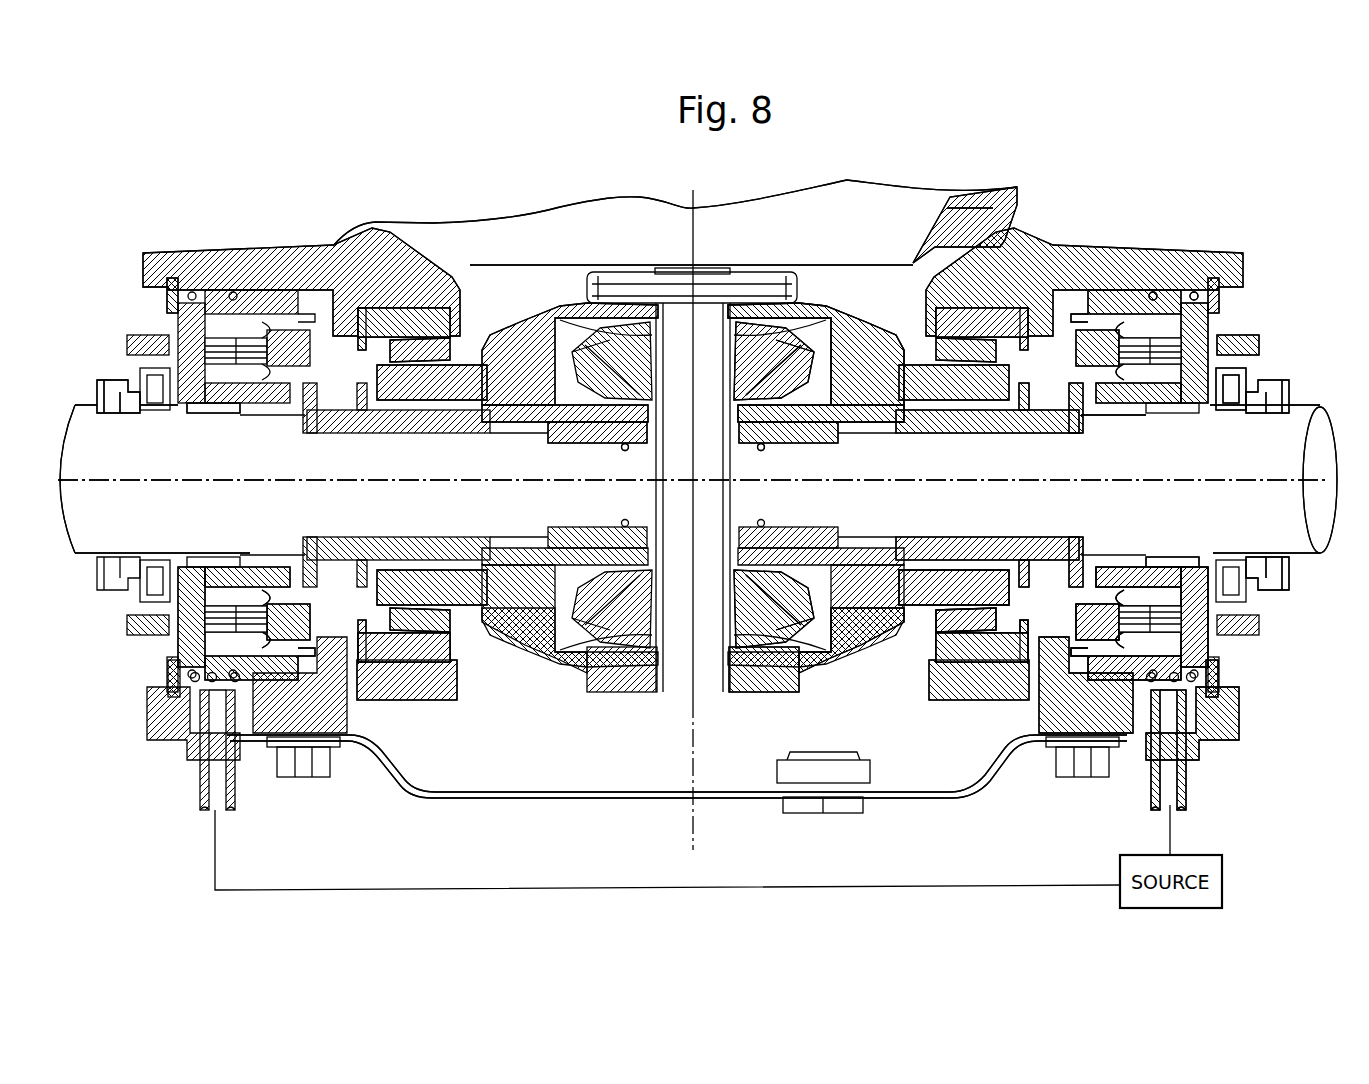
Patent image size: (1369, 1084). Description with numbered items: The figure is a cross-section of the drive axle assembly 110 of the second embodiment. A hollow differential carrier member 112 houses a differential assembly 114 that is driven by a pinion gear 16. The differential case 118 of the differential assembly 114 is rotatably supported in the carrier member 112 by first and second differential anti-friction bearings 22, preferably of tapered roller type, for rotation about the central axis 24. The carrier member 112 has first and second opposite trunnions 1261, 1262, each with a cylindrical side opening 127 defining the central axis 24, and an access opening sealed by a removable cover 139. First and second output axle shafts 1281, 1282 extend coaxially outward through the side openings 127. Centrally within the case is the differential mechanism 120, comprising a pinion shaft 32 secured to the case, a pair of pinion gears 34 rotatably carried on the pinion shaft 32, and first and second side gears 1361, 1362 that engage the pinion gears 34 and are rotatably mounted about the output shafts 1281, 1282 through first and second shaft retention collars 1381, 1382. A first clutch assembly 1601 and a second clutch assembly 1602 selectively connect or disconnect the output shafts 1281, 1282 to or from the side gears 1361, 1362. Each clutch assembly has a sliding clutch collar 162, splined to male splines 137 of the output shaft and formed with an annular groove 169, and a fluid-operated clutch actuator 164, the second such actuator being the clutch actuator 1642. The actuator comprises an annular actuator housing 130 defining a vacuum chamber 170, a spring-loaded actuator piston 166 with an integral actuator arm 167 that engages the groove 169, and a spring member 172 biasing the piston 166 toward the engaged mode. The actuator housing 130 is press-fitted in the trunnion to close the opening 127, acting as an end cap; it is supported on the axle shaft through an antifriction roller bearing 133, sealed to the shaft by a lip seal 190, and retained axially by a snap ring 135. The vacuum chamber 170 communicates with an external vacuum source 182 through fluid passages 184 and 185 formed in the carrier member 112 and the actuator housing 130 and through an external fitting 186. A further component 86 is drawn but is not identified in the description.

The drive axle assembly 110 is at (1258, 193).
The pinion gear 16 is at (900, 204).
The differential carrier member 112 is at (1015, 213).
The second trunnion 1262 is at (230, 262).
The first trunnion 1261 is at (1185, 262).
The vacuum chamber 170 is at (1108, 290).
The fluid passage 185 is at (1152, 325).
The side opening 127 is at (167, 300).
The actuator housing 130 is at (1228, 328).
The lip seal 190 is at (1258, 380).
The second output axle shaft 1282 is at (76, 432).
The first output axle shaft 1281 is at (1303, 548).
The antifriction roller bearing 133 is at (215, 413).
The sliding clutch collar 162 is at (370, 412).
The second side gear 1362 is at (535, 430).
The first side gear 1361 is at (850, 433).
The second shaft retention collar 1382 is at (640, 446).
The first shaft retention collar 1381 is at (737, 432).
The pinion gears 34 is at (725, 358).
The differential mechanism 120 is at (803, 346).
The actuator piston 166 is at (1072, 347).
The annular groove 169 is at (1032, 392).
The male splines 137 is at (1104, 415).
The central axis 24 is at (1266, 478).
The second clutch assembly 1602 is at (296, 530).
The first clutch assembly 1601 is at (1022, 522).
The pinion shaft 32 is at (684, 542).
The actuator arm 167 is at (1000, 580).
The spring member 172 is at (1143, 600).
The fluid-operated clutch actuator 1642 is at (175, 634).
The fluid-operated clutch actuator 164 is at (1216, 628).
The snap ring 135 is at (1228, 656).
The differential anti-friction bearings 22 is at (470, 650).
The differential case 118 is at (860, 628).
The differential assembly 114 is at (735, 698).
The actuator 86 is at (1068, 650).
The fluid passage 184 is at (1232, 713).
The external fitting 186 is at (1195, 775).
The removable cover 139 is at (733, 796).
The external vacuum source 182 is at (1225, 878).